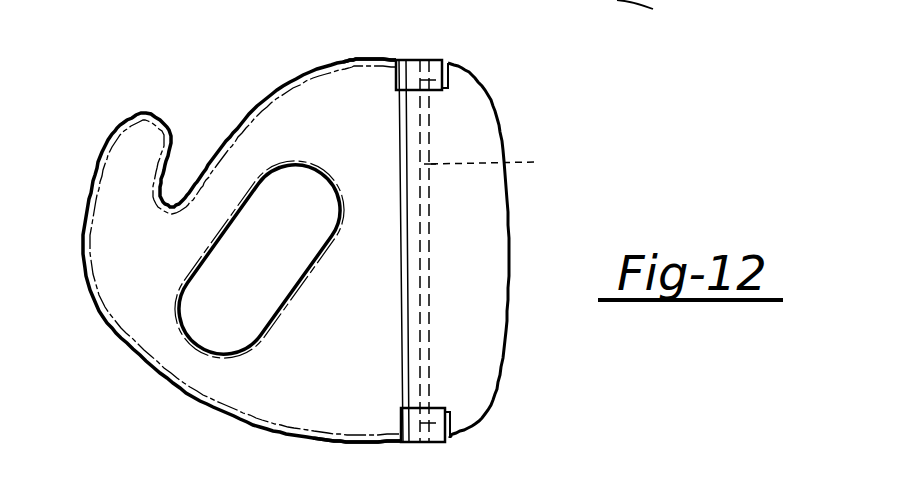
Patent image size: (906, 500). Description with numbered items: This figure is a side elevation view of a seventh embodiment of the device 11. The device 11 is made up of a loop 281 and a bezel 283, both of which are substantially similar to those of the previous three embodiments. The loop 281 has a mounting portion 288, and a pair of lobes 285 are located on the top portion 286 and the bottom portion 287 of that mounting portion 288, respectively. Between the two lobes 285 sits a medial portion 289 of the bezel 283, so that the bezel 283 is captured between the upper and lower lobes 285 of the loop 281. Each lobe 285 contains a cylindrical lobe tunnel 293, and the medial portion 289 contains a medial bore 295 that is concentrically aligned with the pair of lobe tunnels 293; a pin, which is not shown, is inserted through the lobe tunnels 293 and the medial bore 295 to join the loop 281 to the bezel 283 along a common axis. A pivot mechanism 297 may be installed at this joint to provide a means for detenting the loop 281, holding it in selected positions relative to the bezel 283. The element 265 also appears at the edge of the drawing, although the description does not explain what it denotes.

The device 11 is at (170, 113).
The mounting member 265 is at (659, 12).
The loop 281 is at (293, 113).
The bezel 283 is at (477, 220).
The lobes 285 is at (433, 60).
The top portion 286 is at (377, 64).
The bottom portion 287 is at (360, 439).
The mounting portion 288 is at (402, 357).
The medial portion 289 is at (413, 328).
The lobe tunnels 293 is at (443, 79).
The medial bore 295 is at (503, 165).
The pivot mechanism 297 is at (452, 100).